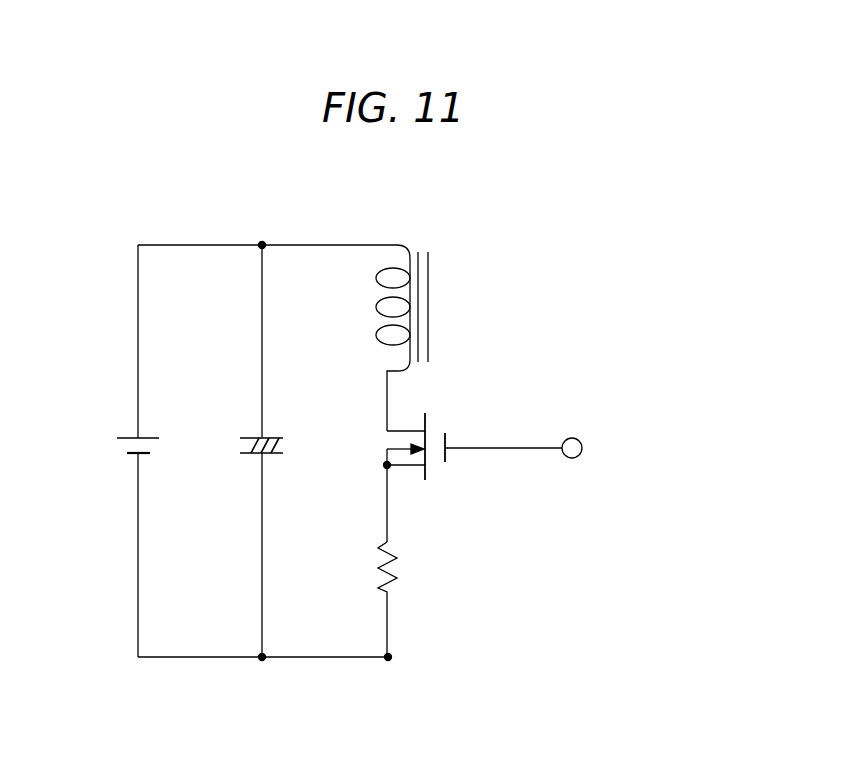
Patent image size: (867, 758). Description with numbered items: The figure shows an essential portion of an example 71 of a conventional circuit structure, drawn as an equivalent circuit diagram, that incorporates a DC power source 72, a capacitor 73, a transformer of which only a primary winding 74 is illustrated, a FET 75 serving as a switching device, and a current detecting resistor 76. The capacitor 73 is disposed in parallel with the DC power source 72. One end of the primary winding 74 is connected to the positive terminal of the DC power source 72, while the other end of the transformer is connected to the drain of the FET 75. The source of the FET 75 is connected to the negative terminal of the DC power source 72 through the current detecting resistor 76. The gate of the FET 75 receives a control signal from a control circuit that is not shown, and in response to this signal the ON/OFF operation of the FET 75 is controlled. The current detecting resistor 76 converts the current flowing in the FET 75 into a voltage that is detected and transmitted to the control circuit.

The circuit structure 71 is at (628, 272).
The DC power source 72 is at (125, 437).
The capacitor 73 is at (276, 437).
The primary winding 74 is at (381, 307).
The FET 75 is at (428, 418).
The current detecting resistor 76 is at (409, 589).